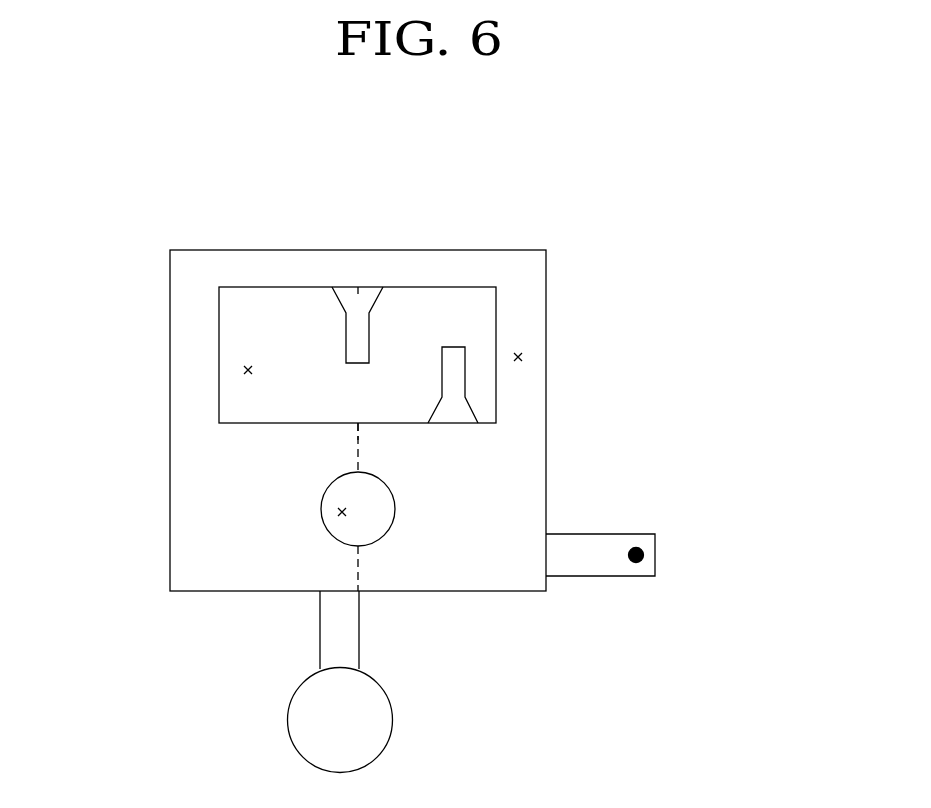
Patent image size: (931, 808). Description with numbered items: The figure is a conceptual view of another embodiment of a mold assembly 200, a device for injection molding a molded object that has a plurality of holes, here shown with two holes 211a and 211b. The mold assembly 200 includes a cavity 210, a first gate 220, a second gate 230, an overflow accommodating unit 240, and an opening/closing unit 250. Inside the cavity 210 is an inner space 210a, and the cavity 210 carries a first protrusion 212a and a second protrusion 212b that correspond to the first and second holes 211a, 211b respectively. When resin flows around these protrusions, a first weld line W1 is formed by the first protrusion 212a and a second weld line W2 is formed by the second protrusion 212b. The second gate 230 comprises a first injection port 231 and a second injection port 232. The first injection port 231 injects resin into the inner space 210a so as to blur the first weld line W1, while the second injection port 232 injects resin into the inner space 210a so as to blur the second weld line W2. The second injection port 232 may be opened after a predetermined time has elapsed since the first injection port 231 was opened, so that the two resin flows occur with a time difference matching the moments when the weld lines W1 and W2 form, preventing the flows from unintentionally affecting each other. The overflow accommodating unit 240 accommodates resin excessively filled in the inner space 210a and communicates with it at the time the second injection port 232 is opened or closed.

The mold assembly 200 is at (580, 222).
The cavity 210 is at (538, 315).
The inner space 210a is at (522, 357).
The first hole 211a is at (248, 370).
The second hole 211b is at (342, 512).
The first protrusion 212a is at (285, 287).
The second protrusion 212b is at (320, 497).
The first gate 220 is at (358, 292).
The second gate 230 is at (752, 403).
The first injection port 231 is at (467, 412).
The second injection port 232 is at (650, 555).
The overflow accommodating unit 240 is at (385, 716).
The opening/closing unit 250 is at (357, 637).
The first weld line W1 is at (357, 455).
The second weld line W2 is at (357, 570).